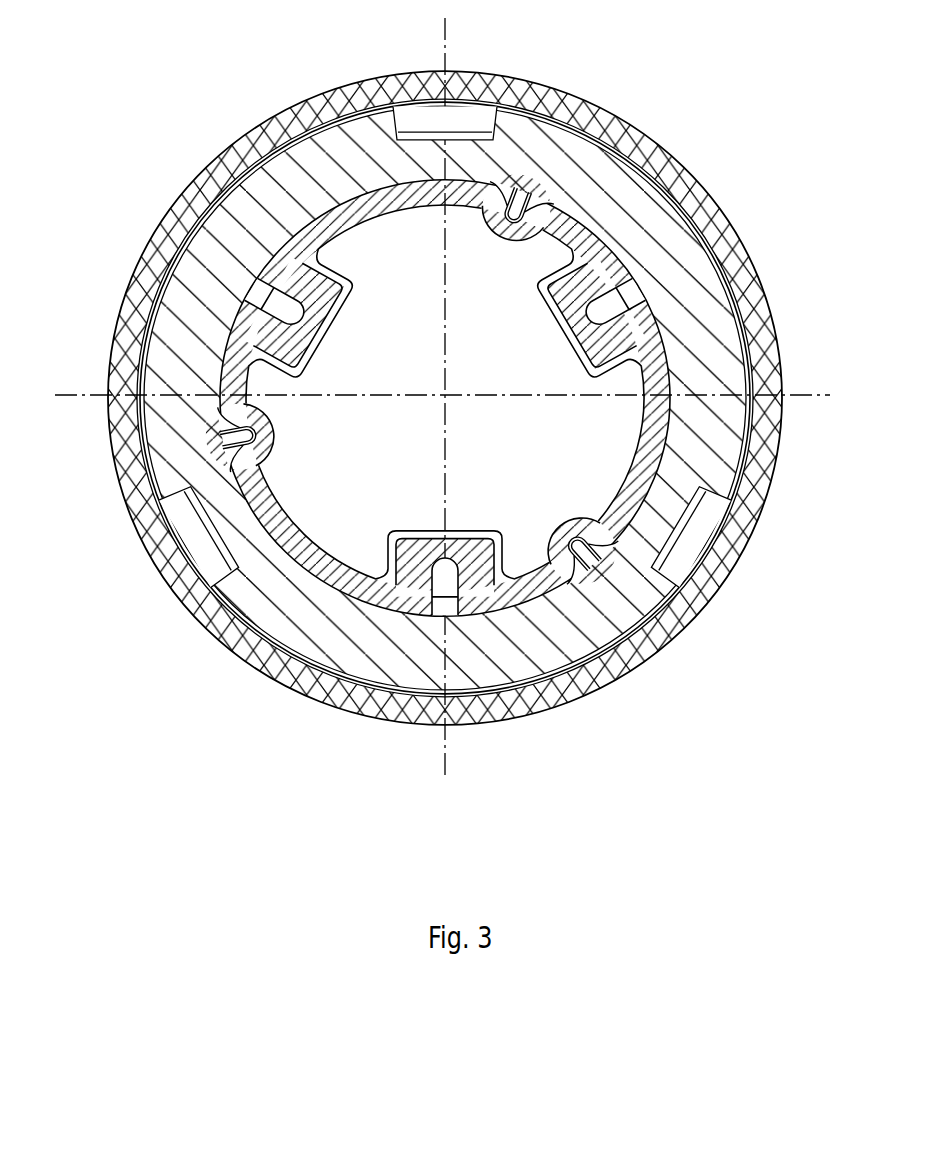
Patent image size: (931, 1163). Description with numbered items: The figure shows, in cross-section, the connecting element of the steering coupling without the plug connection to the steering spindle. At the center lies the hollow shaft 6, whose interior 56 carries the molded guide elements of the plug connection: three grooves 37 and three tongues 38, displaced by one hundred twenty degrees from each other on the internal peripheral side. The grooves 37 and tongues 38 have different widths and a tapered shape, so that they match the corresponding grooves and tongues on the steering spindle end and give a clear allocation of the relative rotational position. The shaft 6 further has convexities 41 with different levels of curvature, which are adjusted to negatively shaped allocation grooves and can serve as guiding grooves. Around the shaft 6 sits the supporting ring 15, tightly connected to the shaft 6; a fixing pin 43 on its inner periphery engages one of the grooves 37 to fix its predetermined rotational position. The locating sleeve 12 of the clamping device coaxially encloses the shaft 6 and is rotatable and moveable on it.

The locating sleeve 12 is at (605, 103).
The supporting ring 15 is at (712, 243).
The interior 56 is at (362, 107).
The shaft 6 is at (588, 220).
The groove 37 is at (360, 216).
The tongue 38 is at (320, 322).
The convexity 41 is at (495, 228).
The fixing pin 43 is at (514, 228).